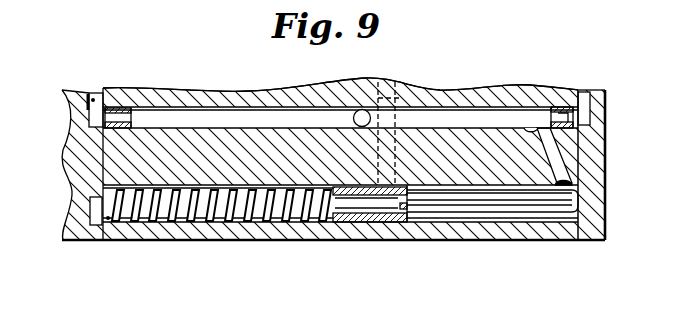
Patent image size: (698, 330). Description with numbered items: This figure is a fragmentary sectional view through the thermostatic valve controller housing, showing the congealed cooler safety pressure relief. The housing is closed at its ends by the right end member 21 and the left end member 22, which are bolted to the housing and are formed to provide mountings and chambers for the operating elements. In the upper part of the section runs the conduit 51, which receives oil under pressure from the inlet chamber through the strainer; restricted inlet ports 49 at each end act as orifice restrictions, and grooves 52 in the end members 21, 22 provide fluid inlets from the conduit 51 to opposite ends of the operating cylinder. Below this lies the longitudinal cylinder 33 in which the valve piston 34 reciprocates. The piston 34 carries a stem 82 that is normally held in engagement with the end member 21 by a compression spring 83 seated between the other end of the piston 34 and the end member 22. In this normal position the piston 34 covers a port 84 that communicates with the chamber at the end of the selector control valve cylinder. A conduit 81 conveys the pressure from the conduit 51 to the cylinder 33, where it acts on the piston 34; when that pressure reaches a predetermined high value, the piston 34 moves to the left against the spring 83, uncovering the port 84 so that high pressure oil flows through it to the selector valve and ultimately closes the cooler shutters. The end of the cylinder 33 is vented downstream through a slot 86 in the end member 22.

The right end member 21 is at (605, 182).
The left end member 22 is at (80, 241).
The longitudinal cylinder 33 is at (489, 221).
The valve piston 34 is at (386, 240).
The restricted inlet ports 49 is at (153, 100).
The conduit 51 is at (359, 108).
The grooves 52 is at (94, 98).
The conduit 81 is at (548, 160).
The stem 82 is at (540, 210).
The compression spring 83 is at (271, 223).
The port 84 is at (429, 87).
The slot 86 is at (97, 212).